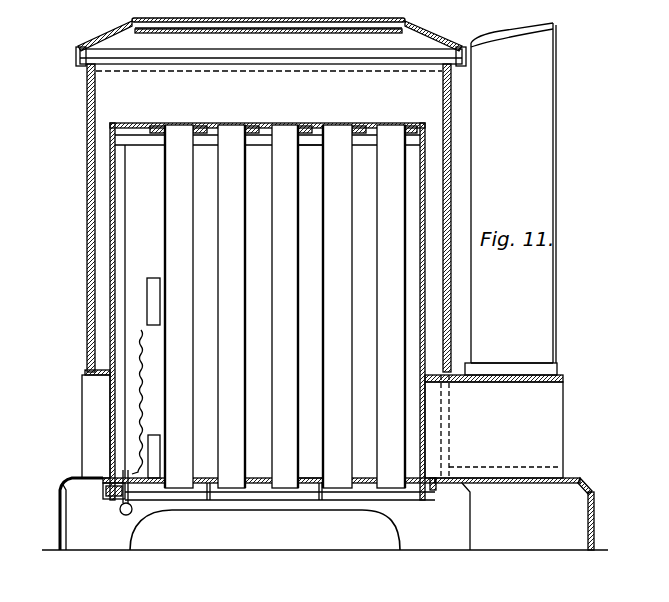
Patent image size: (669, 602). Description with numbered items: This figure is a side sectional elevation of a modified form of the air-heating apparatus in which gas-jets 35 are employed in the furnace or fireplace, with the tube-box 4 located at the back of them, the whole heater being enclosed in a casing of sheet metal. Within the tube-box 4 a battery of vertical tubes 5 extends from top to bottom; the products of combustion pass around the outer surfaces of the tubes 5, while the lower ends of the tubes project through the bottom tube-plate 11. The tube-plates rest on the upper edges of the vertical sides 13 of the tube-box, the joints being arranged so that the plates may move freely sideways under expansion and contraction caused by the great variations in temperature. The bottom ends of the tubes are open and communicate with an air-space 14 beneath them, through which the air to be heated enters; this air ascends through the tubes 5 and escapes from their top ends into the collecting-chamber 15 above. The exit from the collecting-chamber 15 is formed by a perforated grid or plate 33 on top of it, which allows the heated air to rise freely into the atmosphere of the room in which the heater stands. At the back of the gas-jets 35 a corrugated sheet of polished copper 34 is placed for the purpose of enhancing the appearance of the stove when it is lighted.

The tube-box 4 is at (310, 311).
The vertical tube 5 is at (285, 306).
The bottom tube-plate 11 is at (364, 478).
The vertical side of the tube-box 13 is at (427, 305).
The air-space 14 is at (265, 530).
The collecting-chamber 15 is at (271, 249).
The perforated grid or plate 33 is at (318, 24).
The corrugated sheet of polished copper 34 is at (140, 415).
The gas-jet 35 is at (128, 468).